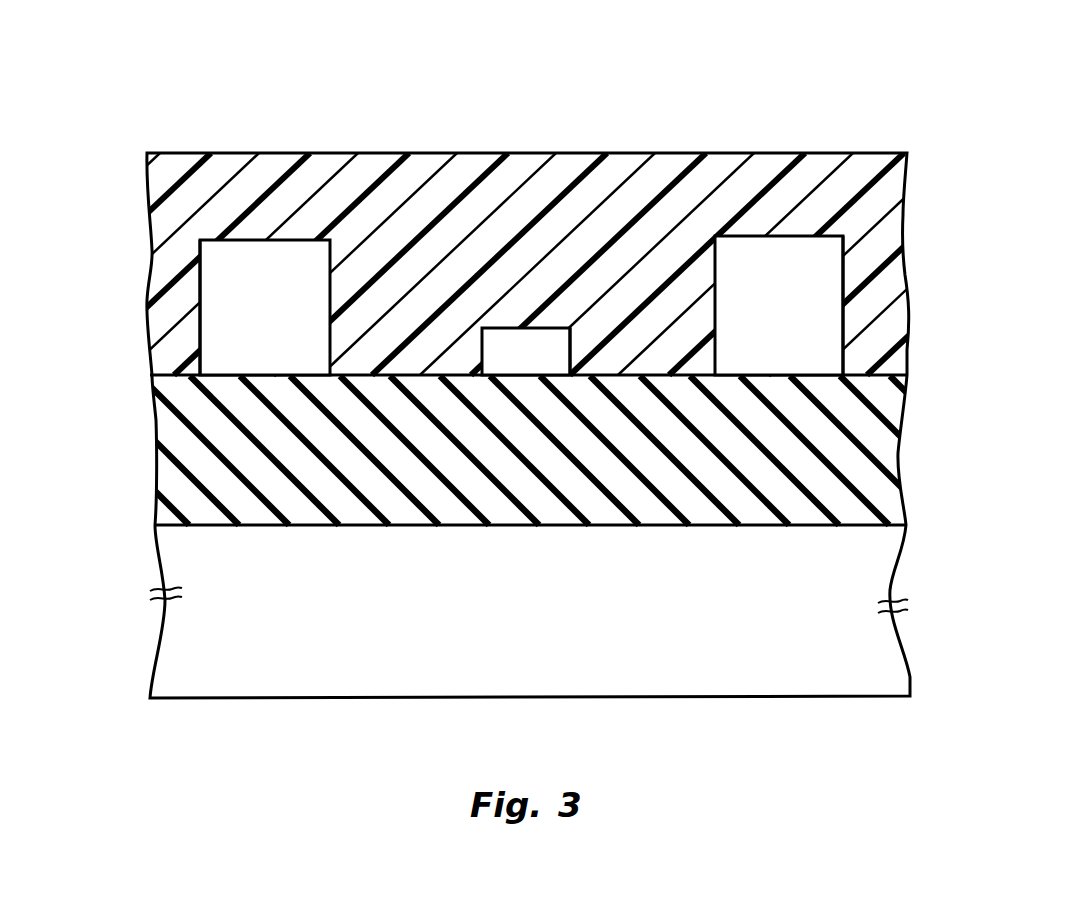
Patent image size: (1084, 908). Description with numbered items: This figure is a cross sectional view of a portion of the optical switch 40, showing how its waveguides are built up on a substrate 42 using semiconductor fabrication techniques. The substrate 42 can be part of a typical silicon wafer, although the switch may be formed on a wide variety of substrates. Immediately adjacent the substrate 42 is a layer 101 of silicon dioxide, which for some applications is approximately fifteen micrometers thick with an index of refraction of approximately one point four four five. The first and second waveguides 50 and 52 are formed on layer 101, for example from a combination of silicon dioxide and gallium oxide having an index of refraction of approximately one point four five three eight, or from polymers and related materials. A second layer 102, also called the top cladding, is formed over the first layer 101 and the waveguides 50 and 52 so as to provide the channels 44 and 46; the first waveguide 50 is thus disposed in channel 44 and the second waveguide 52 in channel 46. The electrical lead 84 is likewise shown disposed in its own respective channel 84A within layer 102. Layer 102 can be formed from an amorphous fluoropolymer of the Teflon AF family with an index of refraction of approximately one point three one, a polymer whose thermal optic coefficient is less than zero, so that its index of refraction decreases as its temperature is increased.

The optical switch 40 is at (150, 132).
The substrate 42 is at (175, 634).
The channel 44 is at (202, 300).
The channel 46 is at (844, 282).
The first waveguide 50 is at (282, 319).
The second waveguide 52 is at (792, 314).
The electrical lead 84 is at (540, 359).
The channel 84A is at (570, 343).
The layer of silicon dioxide 101 is at (175, 443).
The second layer 102 is at (173, 250).